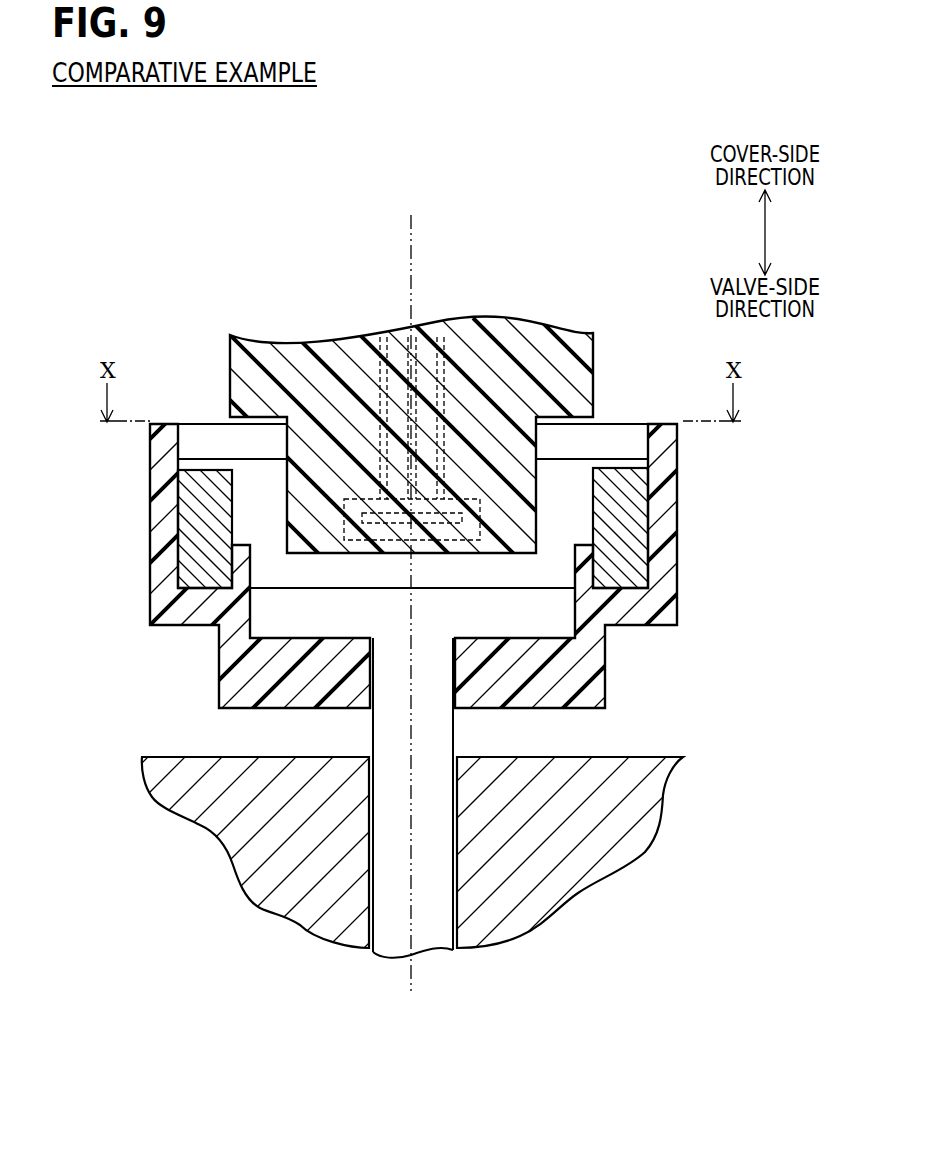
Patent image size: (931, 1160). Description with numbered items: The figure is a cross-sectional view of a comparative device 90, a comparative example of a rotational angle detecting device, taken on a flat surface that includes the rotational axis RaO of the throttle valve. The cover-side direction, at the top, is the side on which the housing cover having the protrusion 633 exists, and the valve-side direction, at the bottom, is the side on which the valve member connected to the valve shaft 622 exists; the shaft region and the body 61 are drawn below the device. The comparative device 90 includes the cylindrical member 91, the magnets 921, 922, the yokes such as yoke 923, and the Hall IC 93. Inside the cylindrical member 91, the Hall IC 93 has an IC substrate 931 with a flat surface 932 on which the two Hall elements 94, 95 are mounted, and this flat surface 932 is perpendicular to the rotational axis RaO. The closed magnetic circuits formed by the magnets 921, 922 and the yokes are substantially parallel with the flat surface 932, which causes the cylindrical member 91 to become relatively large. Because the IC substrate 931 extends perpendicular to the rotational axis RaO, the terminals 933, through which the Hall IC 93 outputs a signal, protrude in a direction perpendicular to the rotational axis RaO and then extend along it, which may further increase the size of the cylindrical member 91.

The comparative device 90 is at (184, 314).
The cylindrical member 91 is at (173, 586).
The magnet 921 is at (198, 557).
The magnet 922 is at (623, 527).
The yoke 923 is at (243, 447).
The Hall IC 93 is at (358, 487).
The IC substrate 931 is at (470, 517).
The flat surface 932 is at (440, 557).
The terminals 933 is at (444, 385).
The Hall element 94 is at (395, 533).
The Hall element 95 is at (415, 535).
The valve seat body 61 is at (163, 782).
The valve shaft 622 is at (385, 737).
The protrusion 633 is at (542, 350).
The rotational axis RaO is at (413, 757).